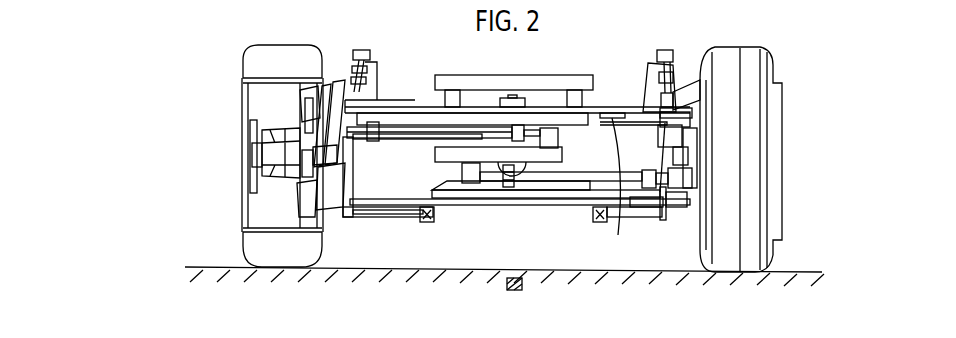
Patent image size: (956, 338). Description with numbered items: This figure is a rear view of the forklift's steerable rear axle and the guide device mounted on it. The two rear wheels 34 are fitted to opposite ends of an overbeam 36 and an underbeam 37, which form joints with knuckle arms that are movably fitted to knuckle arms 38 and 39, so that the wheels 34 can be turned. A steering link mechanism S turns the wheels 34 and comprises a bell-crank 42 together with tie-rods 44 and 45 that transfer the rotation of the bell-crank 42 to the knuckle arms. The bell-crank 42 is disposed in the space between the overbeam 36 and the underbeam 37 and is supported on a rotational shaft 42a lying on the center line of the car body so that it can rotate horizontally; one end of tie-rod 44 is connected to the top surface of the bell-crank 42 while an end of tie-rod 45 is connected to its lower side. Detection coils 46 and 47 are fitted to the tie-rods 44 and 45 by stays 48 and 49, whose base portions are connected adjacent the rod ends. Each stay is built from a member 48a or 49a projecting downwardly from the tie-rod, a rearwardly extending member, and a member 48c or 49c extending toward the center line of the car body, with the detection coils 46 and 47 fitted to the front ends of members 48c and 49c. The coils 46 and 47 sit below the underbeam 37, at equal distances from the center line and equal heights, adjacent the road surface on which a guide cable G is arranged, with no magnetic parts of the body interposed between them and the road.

The rear wheels 34 is at (255, 58).
The overbeam 36 is at (418, 105).
The underbeam 37 is at (587, 205).
The knuckle arm 38 is at (338, 83).
The knuckle arm 39 is at (686, 85).
The bell-crank 42 is at (562, 152).
The rotational shaft 42a is at (518, 170).
The tie-rod 44 is at (412, 137).
The tie-rod 45 is at (625, 172).
The detection coil 46 is at (428, 224).
The detection coil 47 is at (596, 224).
The stay 48 is at (350, 217).
The member 48a is at (344, 180).
The member 48c is at (396, 220).
The stay 49 is at (658, 226).
The member 49a is at (671, 206).
The member 49c is at (643, 220).
The steering link mechanism S is at (574, 141).
The guide cable G is at (512, 273).